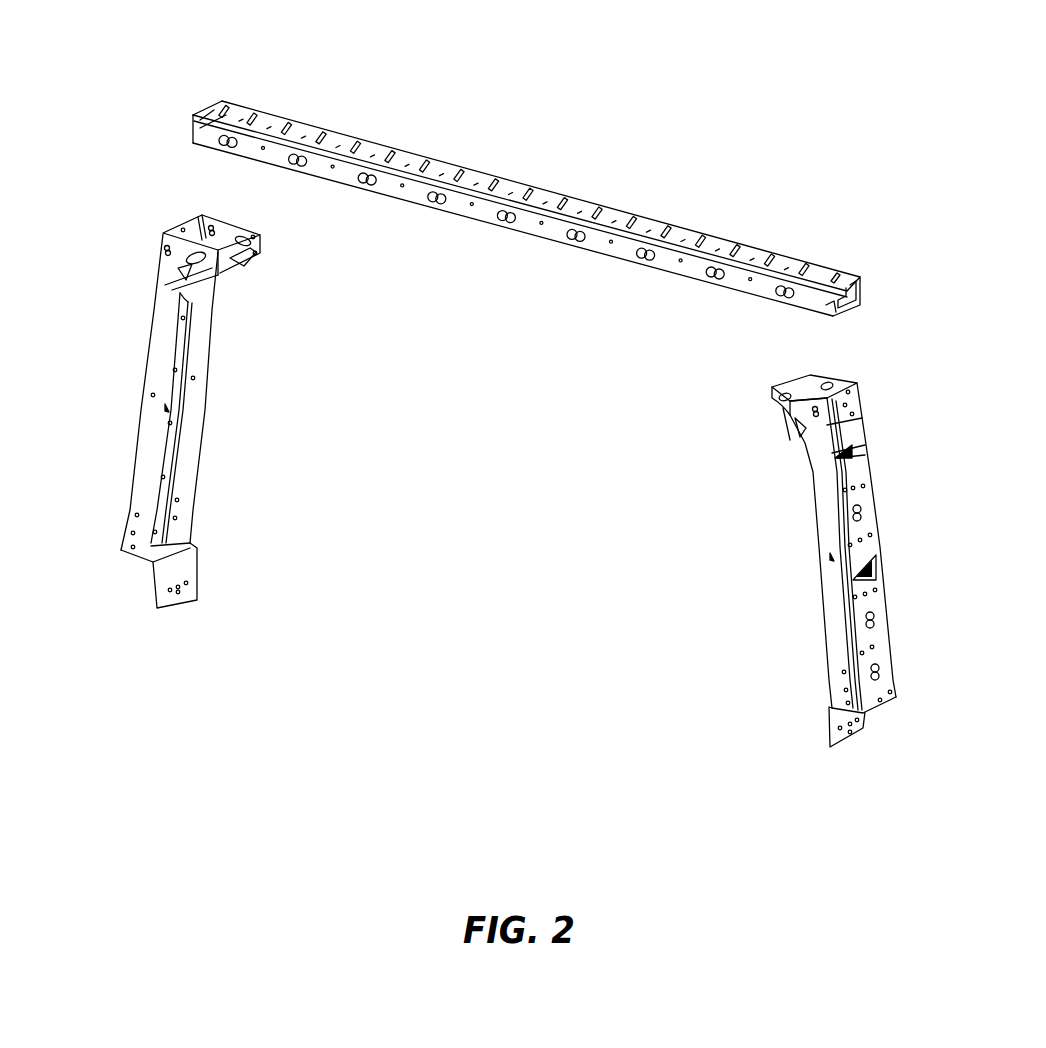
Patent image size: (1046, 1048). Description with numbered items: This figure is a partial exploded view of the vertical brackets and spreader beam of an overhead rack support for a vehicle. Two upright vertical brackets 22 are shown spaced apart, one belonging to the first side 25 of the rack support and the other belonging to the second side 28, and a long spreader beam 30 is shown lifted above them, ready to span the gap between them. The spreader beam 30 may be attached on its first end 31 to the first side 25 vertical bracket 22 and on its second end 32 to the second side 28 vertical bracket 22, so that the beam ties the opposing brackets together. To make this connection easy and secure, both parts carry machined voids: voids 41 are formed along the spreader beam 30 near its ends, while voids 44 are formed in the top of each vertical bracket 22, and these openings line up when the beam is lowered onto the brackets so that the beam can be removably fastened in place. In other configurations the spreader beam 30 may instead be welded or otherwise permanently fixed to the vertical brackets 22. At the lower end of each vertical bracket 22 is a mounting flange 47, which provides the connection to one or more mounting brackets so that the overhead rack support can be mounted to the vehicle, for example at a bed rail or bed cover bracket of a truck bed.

The vertical bracket 22 is at (142, 453).
The first side 25 is at (129, 311).
The second side 28 is at (888, 463).
The spreader beam 30 is at (413, 158).
The first end 31 is at (227, 117).
The second end 32 is at (828, 268).
The voids 41 is at (720, 268).
The voids 44 is at (789, 395).
The mounting flange 47 is at (190, 593).